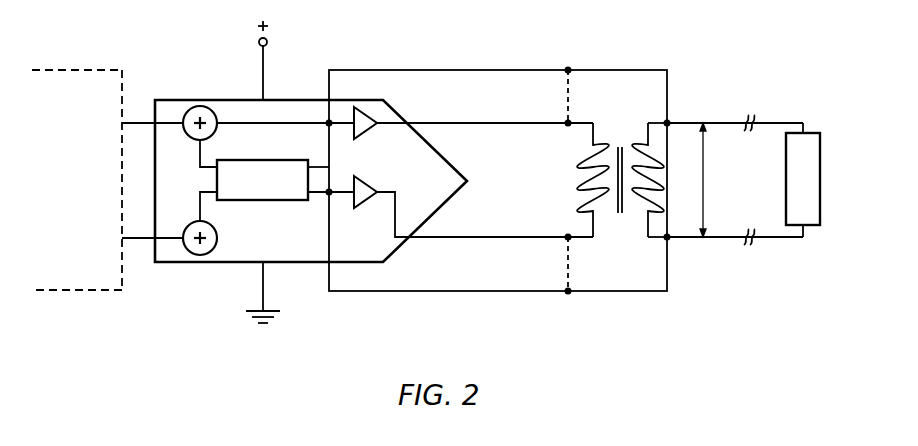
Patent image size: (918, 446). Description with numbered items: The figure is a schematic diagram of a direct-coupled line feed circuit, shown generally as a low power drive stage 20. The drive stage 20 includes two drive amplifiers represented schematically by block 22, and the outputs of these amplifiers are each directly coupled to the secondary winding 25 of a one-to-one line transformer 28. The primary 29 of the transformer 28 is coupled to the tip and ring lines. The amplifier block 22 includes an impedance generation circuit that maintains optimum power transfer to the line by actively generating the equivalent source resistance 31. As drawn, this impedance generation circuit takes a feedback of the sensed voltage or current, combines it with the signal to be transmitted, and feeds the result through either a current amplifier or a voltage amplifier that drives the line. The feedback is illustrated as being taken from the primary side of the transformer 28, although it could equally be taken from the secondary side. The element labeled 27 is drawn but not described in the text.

The low power drive stage 20 is at (725, 333).
The block of two drive amplifiers 22 is at (233, 100).
The secondary winding 25 is at (583, 192).
The line driver amplifier 27 is at (380, 214).
The 1:1 line transformer 28 is at (620, 217).
The primary 29 is at (650, 187).
The equivalent source resistance 31 is at (822, 188).